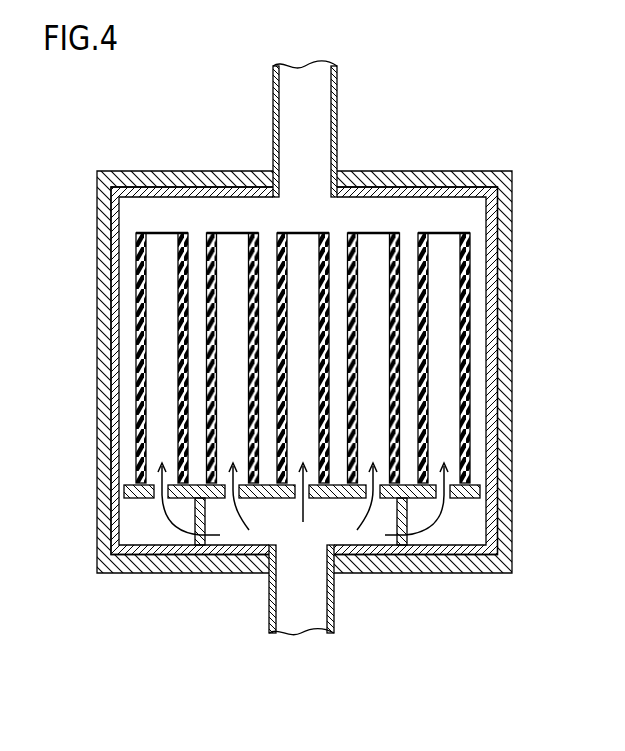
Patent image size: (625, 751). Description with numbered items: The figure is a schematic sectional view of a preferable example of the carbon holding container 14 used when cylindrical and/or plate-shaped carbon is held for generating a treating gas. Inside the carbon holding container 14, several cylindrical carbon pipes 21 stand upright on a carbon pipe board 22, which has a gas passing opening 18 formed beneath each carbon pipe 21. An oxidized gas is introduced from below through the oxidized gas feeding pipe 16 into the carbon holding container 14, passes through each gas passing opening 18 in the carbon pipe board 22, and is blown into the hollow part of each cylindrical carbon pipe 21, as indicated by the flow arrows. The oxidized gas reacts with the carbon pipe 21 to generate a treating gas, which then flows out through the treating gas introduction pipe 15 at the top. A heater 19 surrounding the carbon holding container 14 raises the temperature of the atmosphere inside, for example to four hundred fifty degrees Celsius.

The carbon holding container 14 is at (492, 305).
The treating gas introduction pipe 15 is at (337, 123).
The oxidized gas feeding pipe 16 is at (332, 602).
The gas passing opening 18 is at (160, 493).
The heater 19 is at (505, 238).
The carbon pipe 21 is at (463, 429).
The carbon pipe board 22 is at (460, 493).